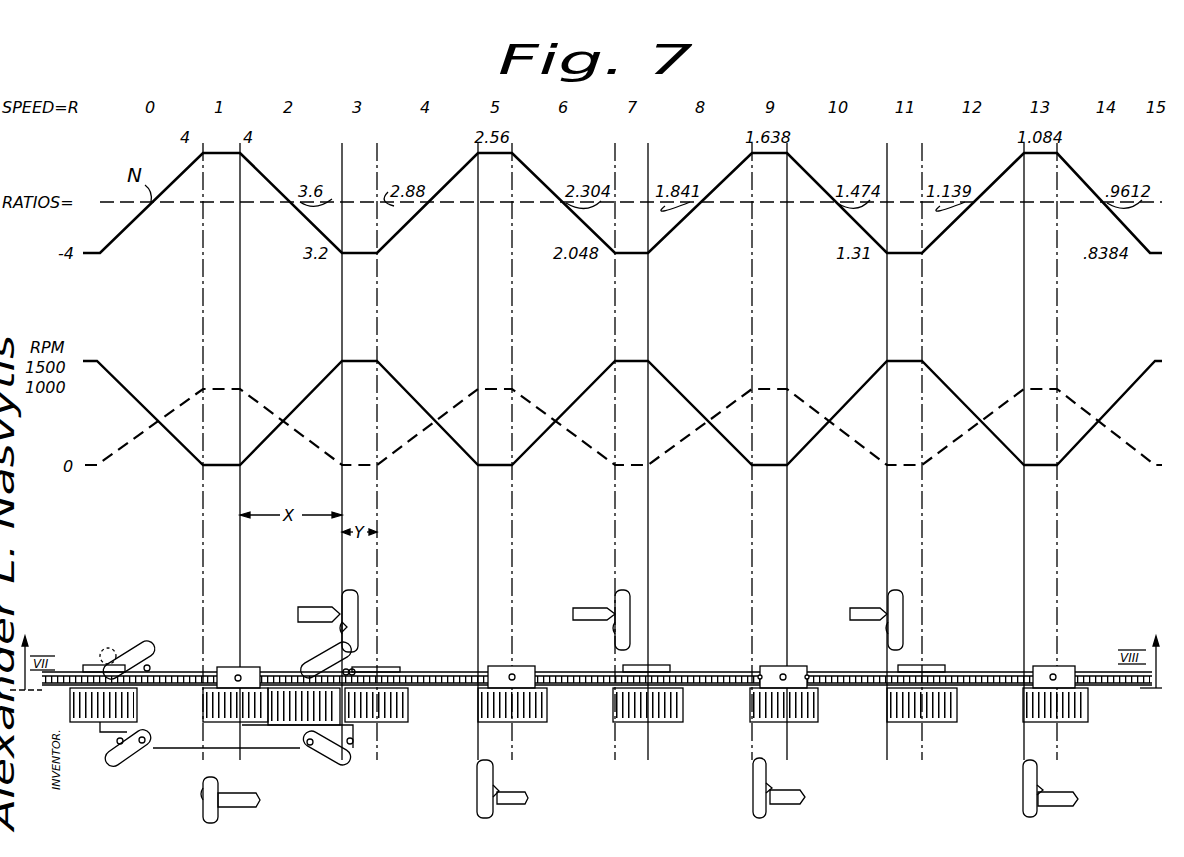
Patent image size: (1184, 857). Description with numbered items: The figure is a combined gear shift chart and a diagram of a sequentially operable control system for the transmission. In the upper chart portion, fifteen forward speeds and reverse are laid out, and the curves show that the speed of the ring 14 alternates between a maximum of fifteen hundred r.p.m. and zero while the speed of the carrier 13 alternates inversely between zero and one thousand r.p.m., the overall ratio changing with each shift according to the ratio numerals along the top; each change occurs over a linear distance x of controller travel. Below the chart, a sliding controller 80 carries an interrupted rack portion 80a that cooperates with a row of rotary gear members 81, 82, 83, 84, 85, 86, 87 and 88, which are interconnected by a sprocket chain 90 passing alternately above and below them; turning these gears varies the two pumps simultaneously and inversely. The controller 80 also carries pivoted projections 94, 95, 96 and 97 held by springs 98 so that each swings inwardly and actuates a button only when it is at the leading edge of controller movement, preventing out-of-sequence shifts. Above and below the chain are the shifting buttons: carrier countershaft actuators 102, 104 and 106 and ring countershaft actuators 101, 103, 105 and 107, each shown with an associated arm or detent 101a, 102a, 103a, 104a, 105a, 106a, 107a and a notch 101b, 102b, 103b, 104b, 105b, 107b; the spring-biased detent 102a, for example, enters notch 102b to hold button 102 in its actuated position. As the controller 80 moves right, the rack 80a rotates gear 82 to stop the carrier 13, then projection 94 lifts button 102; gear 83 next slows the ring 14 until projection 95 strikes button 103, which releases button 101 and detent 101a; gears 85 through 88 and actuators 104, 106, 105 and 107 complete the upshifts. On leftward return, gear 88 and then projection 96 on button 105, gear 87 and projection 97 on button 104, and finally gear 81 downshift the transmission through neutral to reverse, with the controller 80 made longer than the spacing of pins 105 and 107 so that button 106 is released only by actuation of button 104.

The carrier 13 is at (280, 417).
The ring 14 is at (168, 367).
The controller 80 is at (283, 750).
The interrupted rack portion 80a is at (355, 730).
The rotary gear member 81 is at (125, 708).
The rotary gear member 82 is at (207, 708).
The rotary gear member 83 is at (400, 708).
The rotary gear member 84 is at (535, 722).
The rotary gear member 85 is at (665, 722).
The rotary gear member 86 is at (800, 722).
The rotary gear member 87 is at (935, 722).
The rotary gear member 88 is at (1088, 722).
The sprocket chain 90 is at (722, 651).
The projection 94 is at (320, 662).
The projection 95 is at (330, 758).
The projection 96 is at (118, 757).
The projection 97 is at (131, 656).
The spring 98 is at (100, 656).
The button 101 is at (203, 814).
The detent 101a is at (245, 804).
The detent notch 101b is at (203, 795).
The shifting button 102 is at (352, 610).
The detent 102a is at (315, 606).
The notch 102b is at (352, 634).
The shifting button 103 is at (485, 813).
The detent arm 103a is at (528, 800).
The detent notch 103b is at (477, 796).
The shift actuator 104 is at (616, 595).
The detent arm 104a is at (589, 610).
The detent notch 104b is at (612, 633).
The shift actuator 105 is at (767, 816).
The detent arm 105a is at (788, 795).
The detent notch 105b is at (770, 782).
The shift actuator 106 is at (887, 594).
The detent arm 106a is at (861, 609).
The ring countershaft button 107 is at (1038, 815).
The detent arm 107a is at (1058, 796).
The detent notch 107b is at (1023, 790).